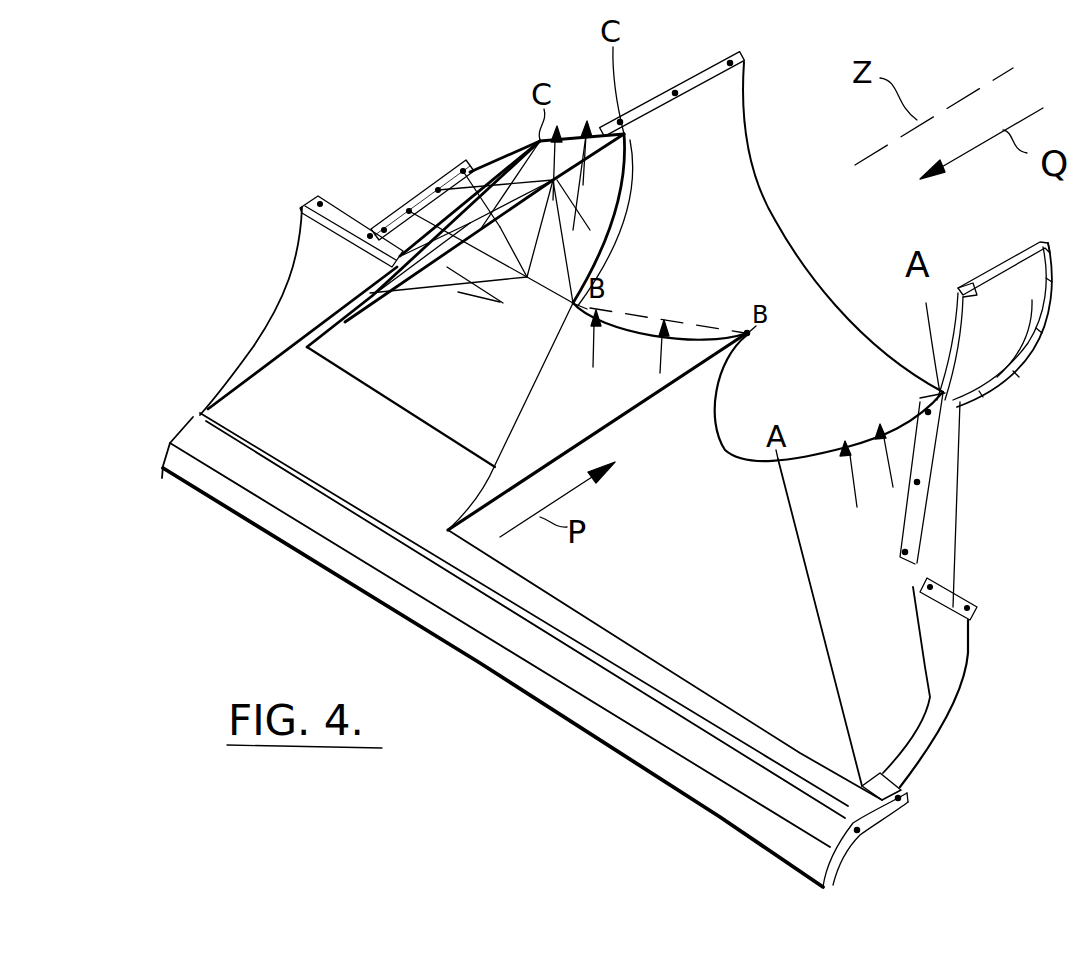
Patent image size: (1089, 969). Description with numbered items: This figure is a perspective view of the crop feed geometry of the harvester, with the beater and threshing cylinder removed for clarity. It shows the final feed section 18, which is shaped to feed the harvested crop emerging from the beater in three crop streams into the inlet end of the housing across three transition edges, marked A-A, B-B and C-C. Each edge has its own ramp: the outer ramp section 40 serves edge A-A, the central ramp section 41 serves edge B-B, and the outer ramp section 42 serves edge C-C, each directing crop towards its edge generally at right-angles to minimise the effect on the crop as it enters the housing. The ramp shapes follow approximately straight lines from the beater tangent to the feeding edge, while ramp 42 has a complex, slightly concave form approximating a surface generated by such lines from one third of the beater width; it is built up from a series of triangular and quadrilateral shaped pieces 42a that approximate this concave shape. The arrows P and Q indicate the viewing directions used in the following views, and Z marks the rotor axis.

The final feed section 18 is at (868, 538).
The ramp section 40 is at (897, 610).
The ramp section 41 is at (627, 402).
The ramp section 42 is at (488, 341).
The triangular and quadrilateral shaped pieces 42a is at (490, 172).